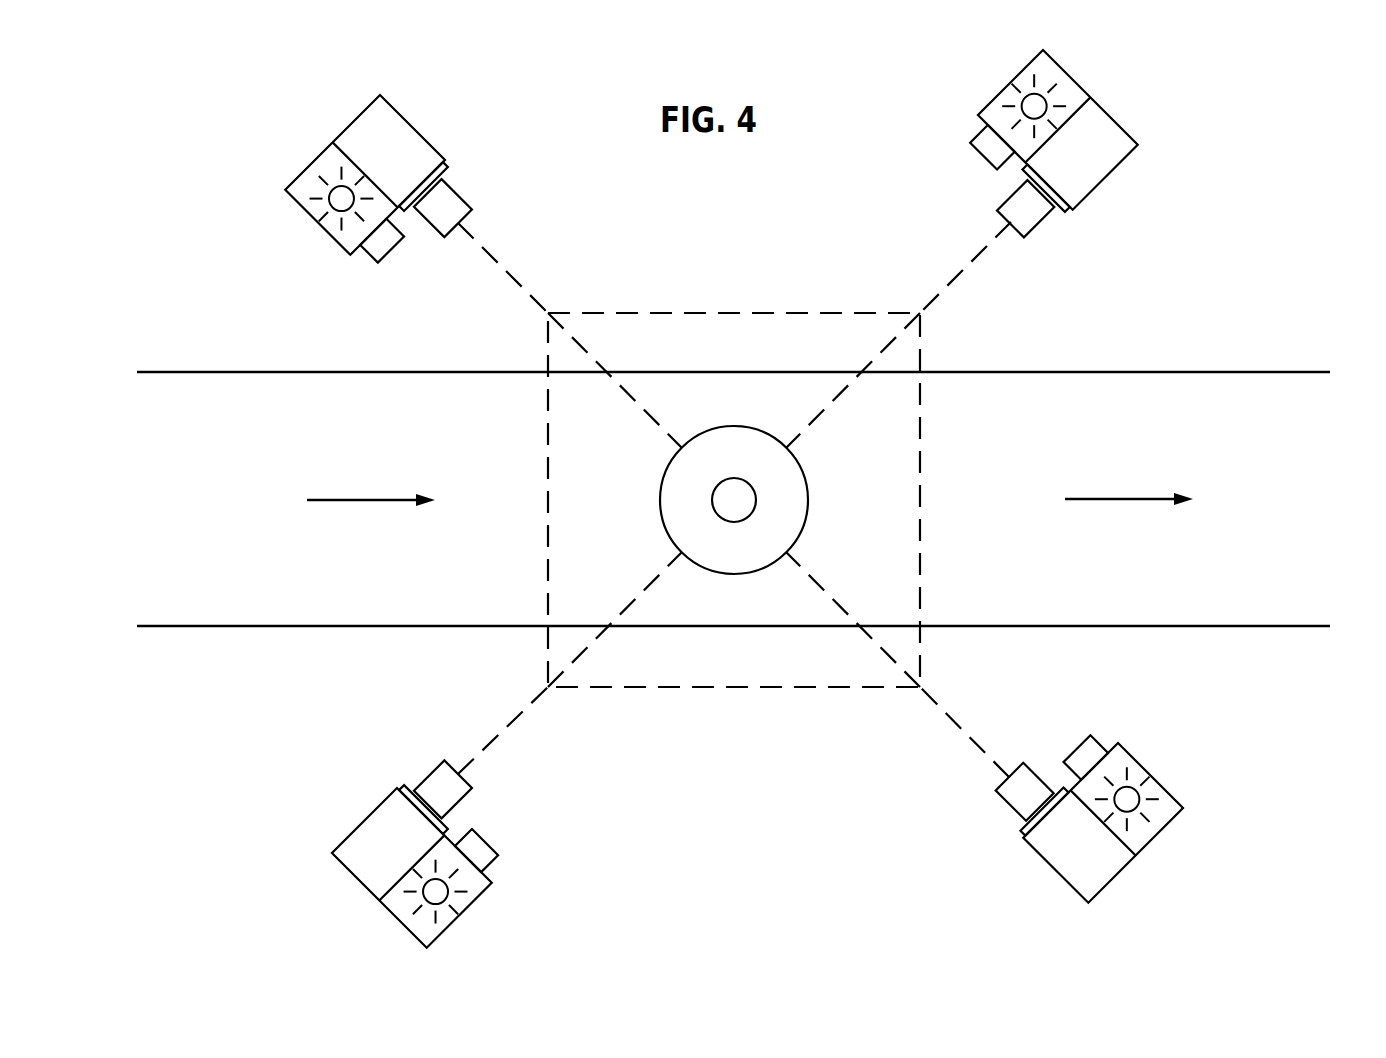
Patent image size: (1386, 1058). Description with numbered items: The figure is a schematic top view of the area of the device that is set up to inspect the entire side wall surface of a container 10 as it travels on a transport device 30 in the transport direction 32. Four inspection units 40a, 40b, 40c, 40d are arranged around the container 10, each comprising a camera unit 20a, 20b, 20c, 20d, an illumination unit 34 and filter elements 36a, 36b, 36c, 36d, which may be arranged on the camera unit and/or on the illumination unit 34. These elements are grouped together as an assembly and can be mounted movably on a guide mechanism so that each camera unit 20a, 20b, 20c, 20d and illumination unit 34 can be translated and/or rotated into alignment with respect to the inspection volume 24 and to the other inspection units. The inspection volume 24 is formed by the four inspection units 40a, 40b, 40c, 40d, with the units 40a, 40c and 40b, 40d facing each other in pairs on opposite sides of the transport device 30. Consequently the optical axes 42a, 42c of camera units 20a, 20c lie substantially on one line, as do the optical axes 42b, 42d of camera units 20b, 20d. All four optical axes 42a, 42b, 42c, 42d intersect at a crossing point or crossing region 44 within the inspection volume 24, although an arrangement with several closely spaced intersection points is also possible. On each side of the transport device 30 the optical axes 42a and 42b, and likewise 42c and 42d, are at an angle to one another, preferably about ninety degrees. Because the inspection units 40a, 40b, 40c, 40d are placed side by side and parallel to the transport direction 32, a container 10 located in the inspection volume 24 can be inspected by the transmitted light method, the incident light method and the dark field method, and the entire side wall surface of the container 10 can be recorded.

The container 10 is at (858, 510).
The camera unit 20a is at (403, 140).
The camera unit 20b is at (1071, 132).
The camera unit 20c is at (1112, 878).
The camera unit 20d is at (353, 832).
The inspection volume 24 is at (920, 345).
The transport device 30 is at (1147, 397).
The transport direction 32 is at (1128, 499).
The illumination unit 34 is at (1003, 88).
The filter element 36a is at (450, 196).
The filter element 36b is at (972, 152).
The filter element 36c is at (1020, 760).
The filter element 36d is at (433, 767).
The inspection unit 40a is at (383, 197).
The inspection unit 40b is at (1101, 154).
The inspection unit 40c is at (1076, 814).
The inspection unit 40d is at (405, 832).
The optical axis 42a is at (520, 278).
The optical axis 42b is at (957, 276).
The optical axis 42c is at (950, 720).
The optical axis 42d is at (530, 725).
The crossing point 44 is at (815, 462).